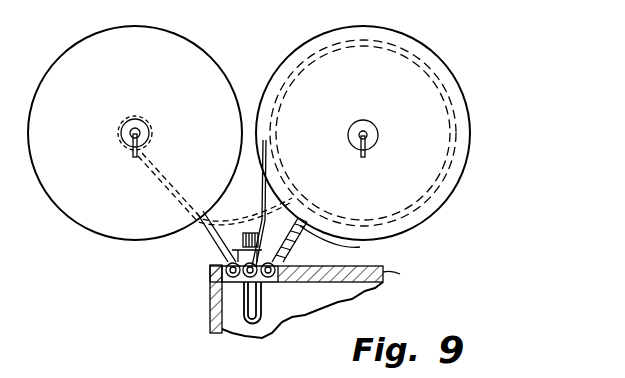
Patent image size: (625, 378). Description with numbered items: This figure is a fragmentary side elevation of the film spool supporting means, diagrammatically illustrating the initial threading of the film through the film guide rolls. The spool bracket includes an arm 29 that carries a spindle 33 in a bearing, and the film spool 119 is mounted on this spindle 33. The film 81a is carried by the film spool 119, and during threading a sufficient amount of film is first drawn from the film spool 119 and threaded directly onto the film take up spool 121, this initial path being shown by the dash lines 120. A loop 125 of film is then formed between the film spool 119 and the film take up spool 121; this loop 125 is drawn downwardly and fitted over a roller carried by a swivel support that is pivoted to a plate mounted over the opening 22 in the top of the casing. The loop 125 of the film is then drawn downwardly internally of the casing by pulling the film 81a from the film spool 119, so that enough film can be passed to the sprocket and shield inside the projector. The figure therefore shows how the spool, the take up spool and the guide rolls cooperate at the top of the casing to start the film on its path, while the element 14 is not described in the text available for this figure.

The flange 14 is at (396, 272).
The opening 22 is at (222, 290).
The arm 29 is at (360, 247).
The spindle 33 is at (365, 135).
The film 81a is at (266, 224).
The film spool 119 is at (422, 72).
The dash lines 120 is at (255, 190).
The film take up spool 121 is at (102, 212).
The loop 125 is at (284, 326).